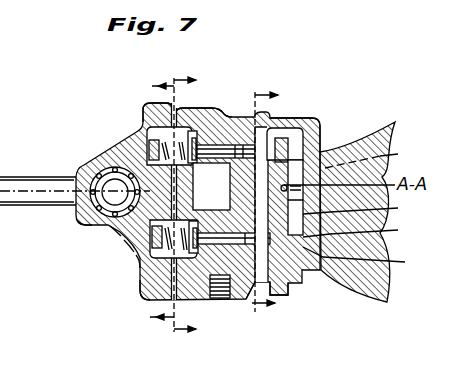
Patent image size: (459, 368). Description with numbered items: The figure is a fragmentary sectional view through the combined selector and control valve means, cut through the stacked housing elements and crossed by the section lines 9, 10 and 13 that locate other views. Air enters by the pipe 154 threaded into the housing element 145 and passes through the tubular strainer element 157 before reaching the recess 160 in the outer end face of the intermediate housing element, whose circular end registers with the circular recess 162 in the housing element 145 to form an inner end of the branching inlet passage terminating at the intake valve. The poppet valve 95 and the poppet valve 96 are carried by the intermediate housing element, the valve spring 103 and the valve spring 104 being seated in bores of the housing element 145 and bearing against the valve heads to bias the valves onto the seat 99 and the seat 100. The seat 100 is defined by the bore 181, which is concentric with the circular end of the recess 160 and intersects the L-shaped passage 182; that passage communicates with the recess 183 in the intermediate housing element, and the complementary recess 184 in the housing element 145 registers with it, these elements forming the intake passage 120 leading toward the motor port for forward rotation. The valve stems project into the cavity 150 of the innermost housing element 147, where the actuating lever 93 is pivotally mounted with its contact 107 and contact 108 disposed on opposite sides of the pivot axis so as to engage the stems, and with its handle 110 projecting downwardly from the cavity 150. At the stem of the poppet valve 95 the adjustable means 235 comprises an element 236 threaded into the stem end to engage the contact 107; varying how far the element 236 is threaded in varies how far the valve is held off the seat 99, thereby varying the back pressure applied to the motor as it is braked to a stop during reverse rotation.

The section line 9- 9 is at (179, 203).
The section line 10- 10 is at (147, 205).
The section line 13- 13 is at (266, 199).
The actuating lever 93 is at (363, 209).
The poppet valve 95 is at (199, 110).
The poppet valve 96 is at (178, 298).
The valve seat 99 is at (228, 108).
The valve seat 100 is at (118, 234).
The valve spring 103 is at (137, 136).
The valve spring 104 is at (132, 249).
The contact 107 is at (270, 128).
The contact 108 is at (370, 261).
The handle 110 is at (289, 290).
The intake passage 120 is at (234, 198).
The housing element 145 is at (110, 160).
The innermost housing element 147 is at (326, 124).
The cavity 150 is at (366, 232).
The pipe 154 is at (25, 176).
The tubular strainer element 157 is at (80, 226).
The recess 160 is at (140, 262).
The recess 162 is at (145, 287).
The bore 181 is at (201, 304).
The L-shaped passage 182 is at (242, 302).
The recess 183 is at (190, 107).
The recess 184 is at (146, 112).
The adjustable means 235 is at (264, 140).
The element 236 is at (377, 157).